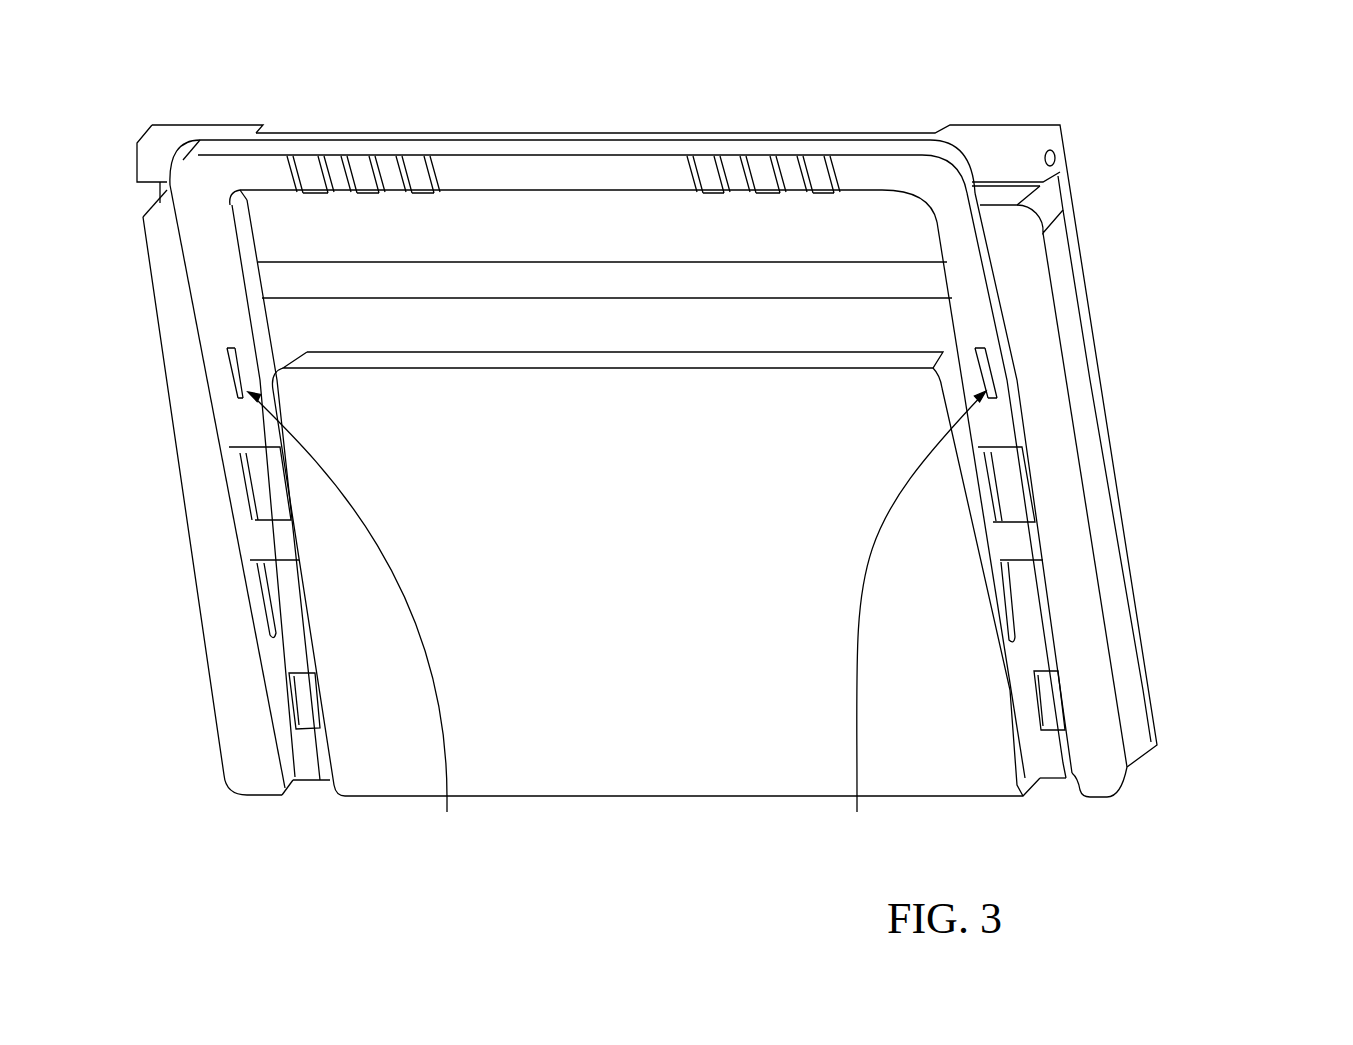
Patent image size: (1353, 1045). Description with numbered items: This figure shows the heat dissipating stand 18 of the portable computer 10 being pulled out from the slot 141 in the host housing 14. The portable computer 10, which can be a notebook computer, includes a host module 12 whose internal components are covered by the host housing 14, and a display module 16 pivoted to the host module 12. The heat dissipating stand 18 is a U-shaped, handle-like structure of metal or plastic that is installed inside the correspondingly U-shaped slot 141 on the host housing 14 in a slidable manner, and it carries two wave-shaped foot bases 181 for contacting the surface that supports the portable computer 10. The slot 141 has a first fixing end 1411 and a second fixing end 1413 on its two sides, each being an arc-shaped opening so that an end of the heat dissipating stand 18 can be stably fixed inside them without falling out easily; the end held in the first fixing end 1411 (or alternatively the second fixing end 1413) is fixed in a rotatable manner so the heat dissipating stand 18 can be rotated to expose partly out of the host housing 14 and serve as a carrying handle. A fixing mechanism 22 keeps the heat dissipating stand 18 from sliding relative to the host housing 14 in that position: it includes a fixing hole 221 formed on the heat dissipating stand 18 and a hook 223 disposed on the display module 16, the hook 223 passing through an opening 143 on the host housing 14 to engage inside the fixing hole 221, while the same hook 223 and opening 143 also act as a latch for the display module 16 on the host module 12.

The portable computer 10 is at (1255, 140).
The host module 12 is at (878, 130).
The host housing 14 is at (187, 434).
The display module 16 is at (1010, 118).
The heat dissipating stand 18 is at (970, 322).
The fixing mechanism 22 is at (1000, 838).
The slot 141 is at (307, 786).
The opening 143 is at (305, 675).
The foot base 181 is at (407, 168).
The fixing hole 221 is at (617, 621).
The hook 223 is at (312, 705).
The first fixing end 1411 is at (265, 632).
The second fixing end 1413 is at (238, 453).